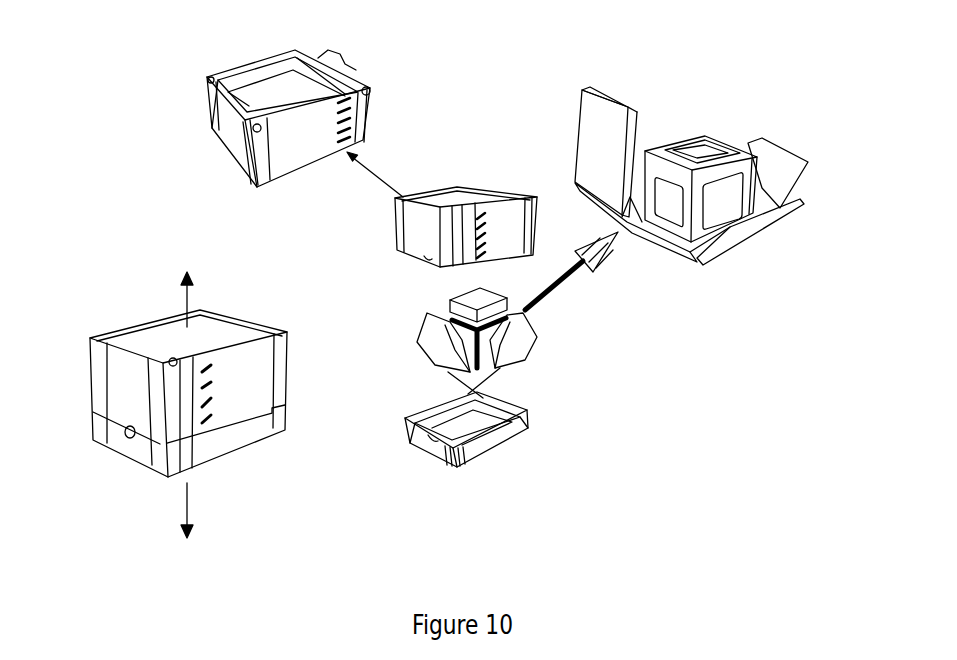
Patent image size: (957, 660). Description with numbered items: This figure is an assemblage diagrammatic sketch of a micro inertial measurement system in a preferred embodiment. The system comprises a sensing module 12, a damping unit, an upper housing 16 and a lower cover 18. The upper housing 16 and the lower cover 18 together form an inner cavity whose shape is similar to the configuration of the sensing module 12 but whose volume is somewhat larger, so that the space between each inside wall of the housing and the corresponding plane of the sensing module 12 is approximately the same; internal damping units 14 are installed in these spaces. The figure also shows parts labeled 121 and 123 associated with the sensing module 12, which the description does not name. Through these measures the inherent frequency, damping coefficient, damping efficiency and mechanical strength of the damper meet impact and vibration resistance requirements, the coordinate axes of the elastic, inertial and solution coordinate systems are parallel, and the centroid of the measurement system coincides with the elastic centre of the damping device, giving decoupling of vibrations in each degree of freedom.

The sensing module 12 is at (469, 338).
The internal damping units 14 is at (420, 334).
The upper housing 16 is at (283, 72).
The lower cover 18 is at (473, 425).
The cube frame 121 is at (708, 155).
The side panel 123 is at (600, 123).